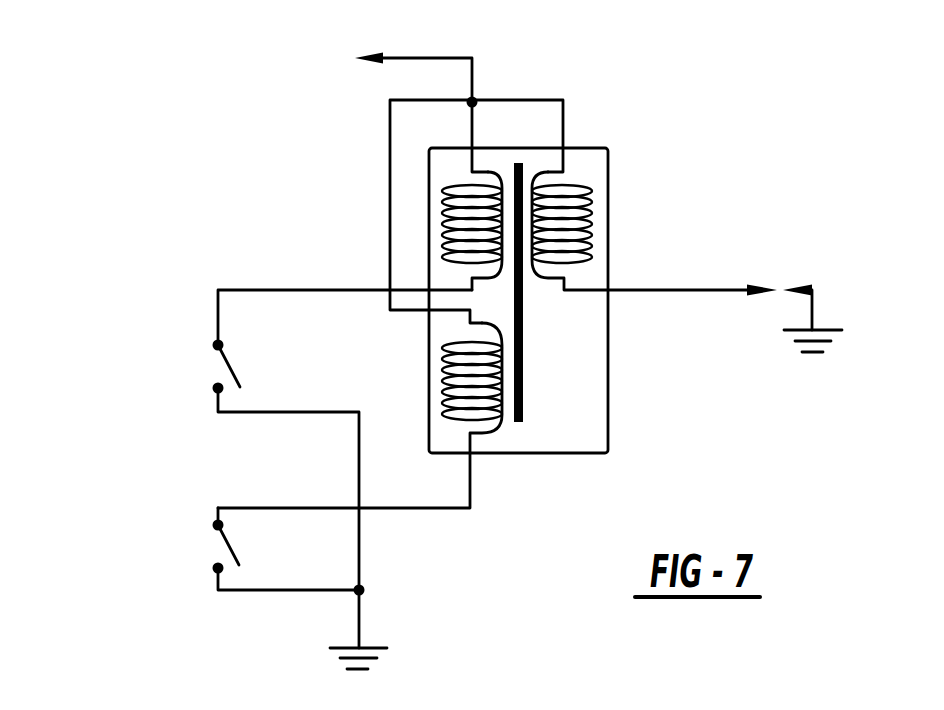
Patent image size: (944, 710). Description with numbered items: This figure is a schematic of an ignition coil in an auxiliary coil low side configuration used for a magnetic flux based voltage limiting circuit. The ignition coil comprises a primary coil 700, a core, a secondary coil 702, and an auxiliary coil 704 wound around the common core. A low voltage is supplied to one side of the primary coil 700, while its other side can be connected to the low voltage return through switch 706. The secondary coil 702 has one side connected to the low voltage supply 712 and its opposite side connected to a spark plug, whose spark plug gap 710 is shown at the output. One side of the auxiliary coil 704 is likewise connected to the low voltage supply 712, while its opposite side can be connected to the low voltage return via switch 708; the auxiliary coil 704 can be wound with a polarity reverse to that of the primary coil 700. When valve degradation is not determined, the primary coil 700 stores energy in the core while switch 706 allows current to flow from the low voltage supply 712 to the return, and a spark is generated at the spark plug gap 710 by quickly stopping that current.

The primary coil 700 is at (463, 184).
The secondary coil 702 is at (583, 183).
The auxiliary coil 704 is at (448, 423).
The switch 706 is at (212, 365).
The switch 708 is at (217, 547).
The spark plug gap 710 is at (775, 303).
The low voltage supply 712 is at (391, 74).